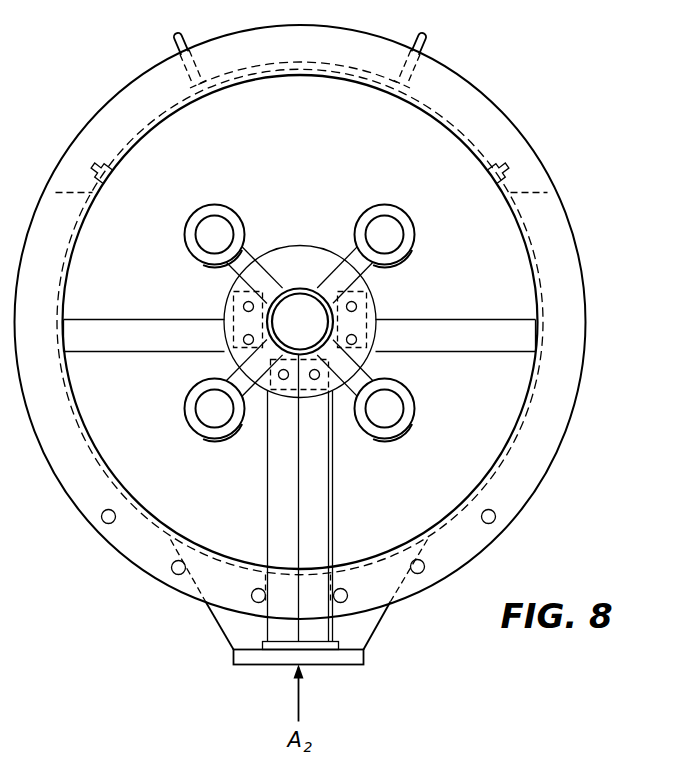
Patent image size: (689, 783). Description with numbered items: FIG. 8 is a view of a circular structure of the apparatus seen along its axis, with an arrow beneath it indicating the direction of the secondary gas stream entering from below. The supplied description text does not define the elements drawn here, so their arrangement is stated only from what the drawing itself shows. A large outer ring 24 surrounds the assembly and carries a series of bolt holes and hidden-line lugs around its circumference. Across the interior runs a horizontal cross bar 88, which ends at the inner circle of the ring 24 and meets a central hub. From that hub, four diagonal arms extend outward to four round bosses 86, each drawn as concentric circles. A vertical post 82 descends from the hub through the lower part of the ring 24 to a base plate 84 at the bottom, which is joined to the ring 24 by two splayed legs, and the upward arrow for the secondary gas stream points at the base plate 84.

The vessel shell ring 24 is at (581, 270).
The support post 82 is at (290, 455).
The base plate 84 is at (350, 662).
The bosses 86 is at (252, 256).
The horizontal cross bar 88 is at (496, 320).